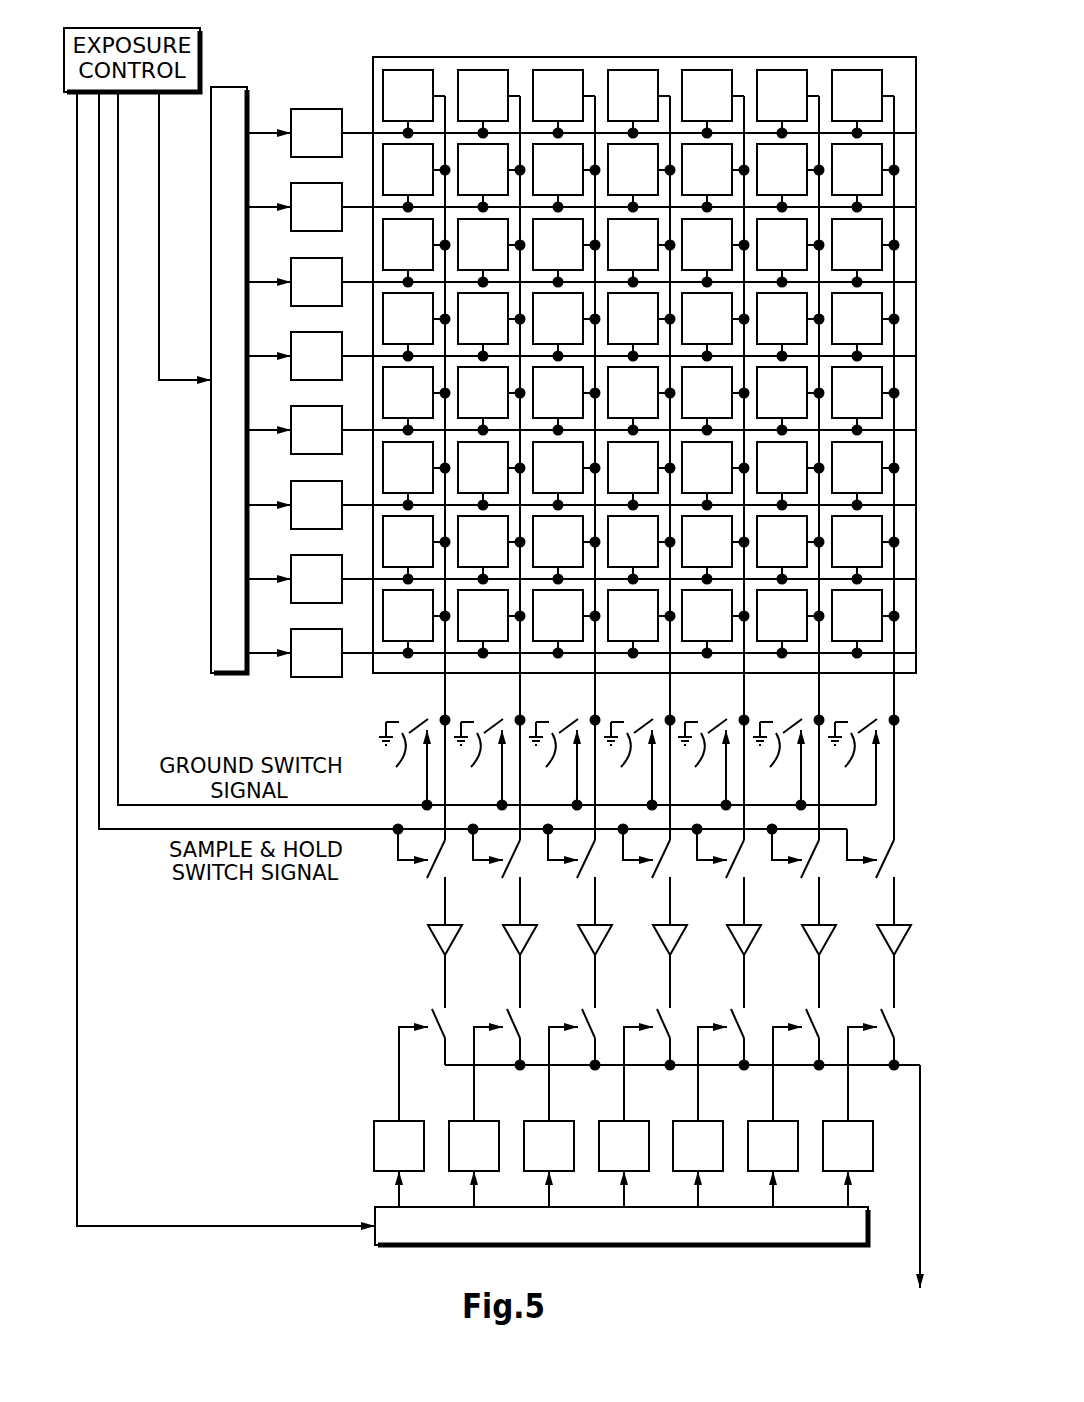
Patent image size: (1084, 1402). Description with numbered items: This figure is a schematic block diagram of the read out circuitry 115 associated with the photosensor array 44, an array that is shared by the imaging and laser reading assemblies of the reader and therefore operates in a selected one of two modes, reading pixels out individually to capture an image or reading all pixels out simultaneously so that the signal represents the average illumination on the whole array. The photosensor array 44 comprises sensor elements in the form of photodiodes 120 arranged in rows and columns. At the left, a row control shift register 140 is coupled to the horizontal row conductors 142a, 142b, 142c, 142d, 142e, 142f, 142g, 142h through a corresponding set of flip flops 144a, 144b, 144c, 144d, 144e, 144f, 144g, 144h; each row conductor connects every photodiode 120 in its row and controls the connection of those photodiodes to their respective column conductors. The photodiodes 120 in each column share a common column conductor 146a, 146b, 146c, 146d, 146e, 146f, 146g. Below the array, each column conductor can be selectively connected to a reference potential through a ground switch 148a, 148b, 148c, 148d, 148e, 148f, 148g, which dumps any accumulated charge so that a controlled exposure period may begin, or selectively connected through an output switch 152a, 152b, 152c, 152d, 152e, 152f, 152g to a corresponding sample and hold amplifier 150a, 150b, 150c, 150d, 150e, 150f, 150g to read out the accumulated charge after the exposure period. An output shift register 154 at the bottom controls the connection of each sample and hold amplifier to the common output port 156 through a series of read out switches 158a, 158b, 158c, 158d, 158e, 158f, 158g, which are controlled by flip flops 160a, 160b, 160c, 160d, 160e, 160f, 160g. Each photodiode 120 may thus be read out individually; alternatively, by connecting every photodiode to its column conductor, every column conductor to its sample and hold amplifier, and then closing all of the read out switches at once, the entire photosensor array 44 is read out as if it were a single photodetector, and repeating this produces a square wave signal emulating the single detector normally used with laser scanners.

The photosensor array 44 is at (572, 50).
The read out circuitry 115 is at (362, 990).
The photodiodes 120 is at (872, 235).
The row control shift register 140 is at (232, 100).
The row conductor 142a is at (617, 108).
The row conductor 142b is at (617, 182).
The row conductor 142c is at (617, 257).
The row conductor 142d is at (617, 331).
The row conductor 142e is at (617, 405).
The row conductor 142f is at (617, 480).
The row conductor 142g is at (617, 554).
The row conductor 142h is at (617, 628).
The flip flop 144a is at (294, 120).
The flip flop 144b is at (294, 194).
The flip flop 144c is at (294, 269).
The flip flop 144d is at (294, 343).
The flip flop 144e is at (294, 417).
The flip flop 144f is at (294, 492).
The flip flop 144g is at (294, 566).
The flip flop 144h is at (294, 640).
The column conductor 146a is at (417, 468).
The column conductor 146b is at (492, 468).
The column conductor 146c is at (567, 468).
The column conductor 146d is at (642, 468).
The column conductor 146e is at (716, 468).
The column conductor 146f is at (791, 468).
The column conductor 146g is at (866, 468).
The ground switch 148a is at (412, 763).
The ground switch 148b is at (487, 763).
The ground switch 148c is at (562, 763).
The ground switch 148d is at (637, 763).
The ground switch 148e is at (711, 763).
The ground switch 148f is at (786, 763).
The ground switch 148g is at (861, 761).
The sample and hold amplifier 150a is at (416, 966).
The sample and hold amplifier 150b is at (497, 966).
The sample and hold amplifier 150c is at (572, 966).
The sample and hold amplifier 150d is at (647, 966).
The sample and hold amplifier 150e is at (721, 966).
The sample and hold amplifier 150f is at (796, 966).
The sample and hold amplifier 150g is at (871, 966).
The output switch 152a is at (450, 875).
The output switch 152b is at (526, 875).
The output switch 152c is at (600, 875).
The output switch 152d is at (676, 875).
The output switch 152e is at (750, 875).
The output switch 152f is at (822, 875).
The output switch 152g is at (901, 877).
The output shift register 154 is at (870, 1232).
The common output port 156 is at (911, 1201).
The read out switch 158a is at (451, 1054).
The read out switch 158b is at (526, 1054).
The read out switch 158c is at (600, 1054).
The read out switch 158d is at (676, 1054).
The read out switch 158e is at (750, 1054).
The read out switch 158f is at (822, 1054).
The read out switch 158g is at (900, 1054).
The flip flop 160a is at (371, 1164).
The flip flop 160b is at (455, 1150).
The flip flop 160c is at (530, 1150).
The flip flop 160d is at (605, 1150).
The flip flop 160e is at (679, 1150).
The flip flop 160f is at (754, 1150).
The flip flop 160g is at (829, 1150).